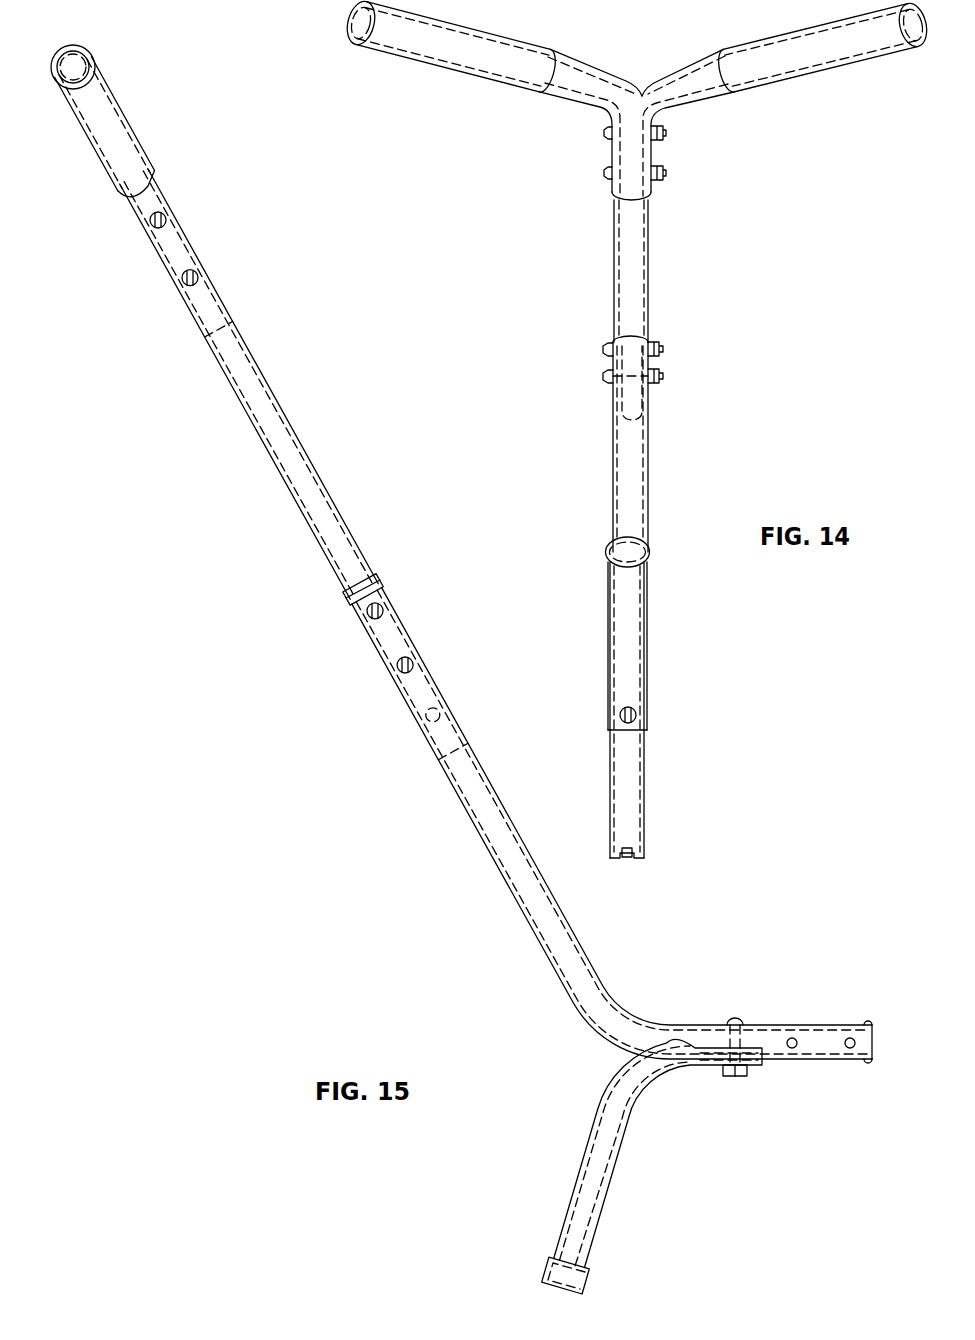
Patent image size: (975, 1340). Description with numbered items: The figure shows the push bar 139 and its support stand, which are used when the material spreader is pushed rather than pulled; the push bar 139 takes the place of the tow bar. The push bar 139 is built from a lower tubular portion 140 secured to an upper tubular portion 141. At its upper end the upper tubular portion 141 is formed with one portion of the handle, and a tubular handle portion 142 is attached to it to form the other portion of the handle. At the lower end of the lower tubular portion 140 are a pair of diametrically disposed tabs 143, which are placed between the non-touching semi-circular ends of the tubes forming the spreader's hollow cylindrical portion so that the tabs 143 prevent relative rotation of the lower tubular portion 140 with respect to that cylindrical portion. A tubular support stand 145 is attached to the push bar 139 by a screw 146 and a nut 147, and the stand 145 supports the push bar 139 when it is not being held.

In FIG. 14, the push bar 139 is at (610, 603).
In FIG. 15, the push bar 139 is at (435, 675).
In FIG. 14, the lower tubular portion 140 is at (648, 530).
In FIG. 15, the lower tubular portion 140 is at (475, 827).
In FIG. 14, the upper tubular portion 141 is at (613, 247).
In FIG. 15, the upper tubular portion 141 is at (258, 435).
In FIG. 14, the tubular handle portion 142 is at (698, 97).
In FIG. 14, the tabs 143 is at (635, 853).
In FIG. 15, the tabs 143 is at (870, 1020).
In FIG. 14, the tubular support stand 145 is at (648, 640).
In FIG. 15, the tubular support stand 145 is at (607, 1190).
In FIG. 14, the screw 146 is at (638, 712).
In FIG. 15, the screw 146 is at (740, 1017).
In FIG. 15, the nut 147 is at (748, 1070).